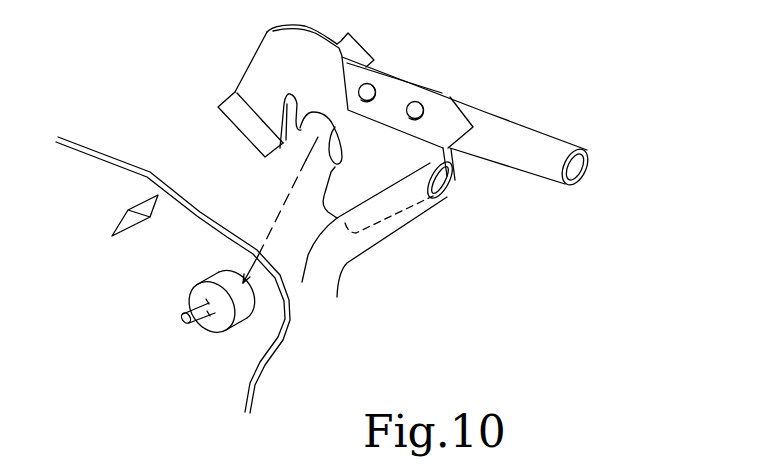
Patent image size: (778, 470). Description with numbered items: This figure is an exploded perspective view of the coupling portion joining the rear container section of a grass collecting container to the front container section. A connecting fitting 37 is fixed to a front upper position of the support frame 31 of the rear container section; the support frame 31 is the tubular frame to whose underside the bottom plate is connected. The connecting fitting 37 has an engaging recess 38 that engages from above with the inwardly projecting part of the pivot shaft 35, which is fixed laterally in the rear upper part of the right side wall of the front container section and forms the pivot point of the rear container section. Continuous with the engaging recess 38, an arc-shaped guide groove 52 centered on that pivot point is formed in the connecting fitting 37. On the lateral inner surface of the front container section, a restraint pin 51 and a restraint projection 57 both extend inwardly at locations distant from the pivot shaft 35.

The support frame 31 is at (548, 147).
The pivot shaft 35 is at (223, 323).
The connecting fitting 37 is at (260, 63).
The engaging recess 38 is at (342, 163).
The restraint pin 51 is at (183, 318).
The guide groove 52 is at (288, 113).
The restraint projection 57 is at (118, 218).